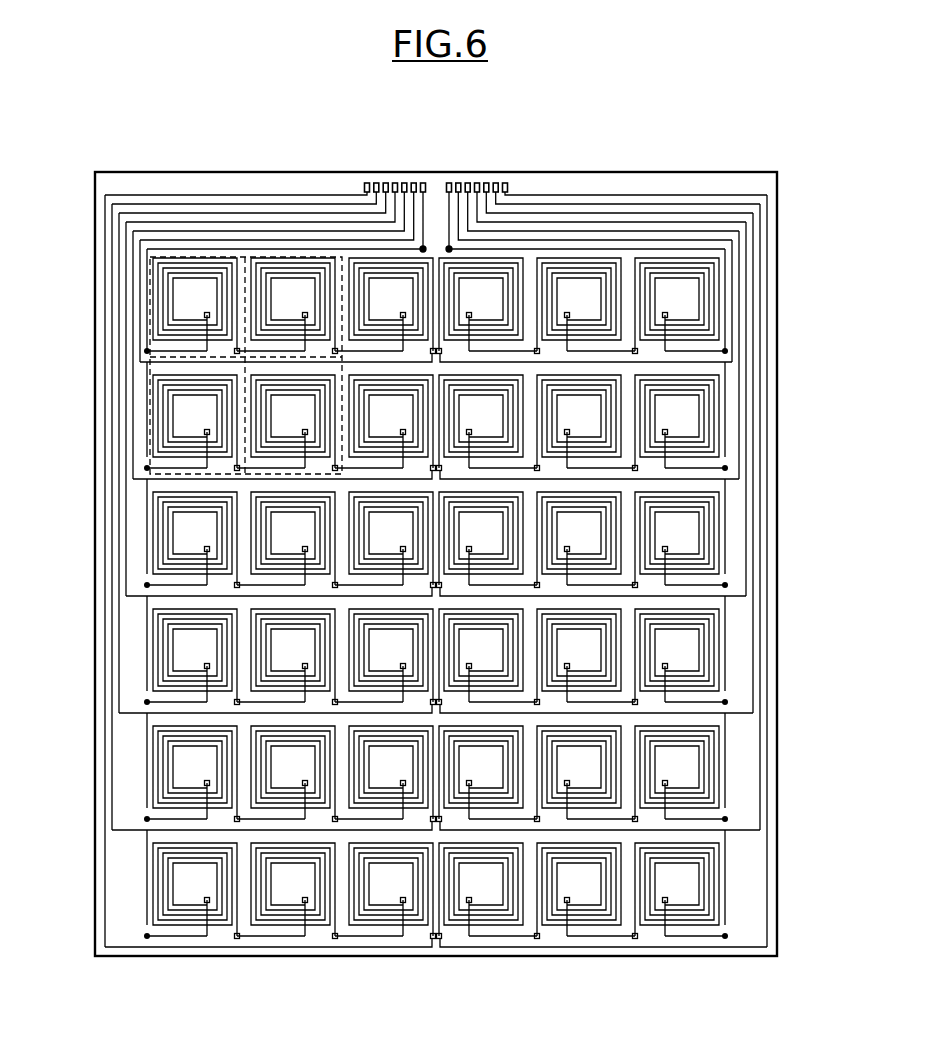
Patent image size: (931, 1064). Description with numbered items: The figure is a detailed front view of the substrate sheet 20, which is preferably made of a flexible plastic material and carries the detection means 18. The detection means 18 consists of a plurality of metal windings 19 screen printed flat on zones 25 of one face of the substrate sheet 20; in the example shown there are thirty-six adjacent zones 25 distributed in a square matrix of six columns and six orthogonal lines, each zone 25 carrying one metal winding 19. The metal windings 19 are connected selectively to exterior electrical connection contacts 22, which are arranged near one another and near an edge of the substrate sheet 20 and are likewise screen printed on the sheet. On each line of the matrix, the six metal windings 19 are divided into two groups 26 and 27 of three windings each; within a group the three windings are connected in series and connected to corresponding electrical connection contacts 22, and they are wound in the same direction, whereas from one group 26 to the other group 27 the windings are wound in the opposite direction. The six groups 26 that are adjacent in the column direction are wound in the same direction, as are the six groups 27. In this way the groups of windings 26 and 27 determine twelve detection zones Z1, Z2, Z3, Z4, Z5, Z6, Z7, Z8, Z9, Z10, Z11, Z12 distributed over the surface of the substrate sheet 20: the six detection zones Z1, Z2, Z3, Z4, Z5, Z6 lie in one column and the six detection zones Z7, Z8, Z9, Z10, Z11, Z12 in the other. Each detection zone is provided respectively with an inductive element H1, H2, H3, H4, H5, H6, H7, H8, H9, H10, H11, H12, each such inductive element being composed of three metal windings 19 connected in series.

The detection means 18 is at (187, 184).
The metal winding 19 is at (579, 257).
The substrate sheet 20 is at (692, 182).
The electrical connection contact 22 is at (385, 182).
The zone 25 is at (285, 255).
The first group of metal windings 26 is at (433, 968).
The second group of metal windings 27 is at (586, 572).
The detection zone Z1 is at (121, 902).
The detection zone Z2 is at (121, 785).
The detection zone Z3 is at (121, 668).
The detection zone Z4 is at (121, 551).
The detection zone Z5 is at (121, 434).
The detection zone Z6 is at (121, 317).
The detection zone Z7 is at (751, 902).
The detection zone Z8 is at (751, 785).
The detection zone Z9 is at (751, 668).
The detection zone Z10 is at (751, 551).
The detection zone Z11 is at (751, 434).
The detection zone Z12 is at (751, 317).
The inductive element H1 is at (216, 936).
The inductive element H2 is at (216, 819).
The inductive element H3 is at (216, 702).
The inductive element H4 is at (216, 585).
The inductive element H5 is at (216, 468).
The inductive element H6 is at (216, 351).
The inductive element H7 is at (656, 936).
The inductive element H8 is at (656, 819).
The inductive element H9 is at (656, 702).
The inductive element H10 is at (656, 585).
The inductive element H11 is at (656, 468).
The inductive element H12 is at (656, 351).